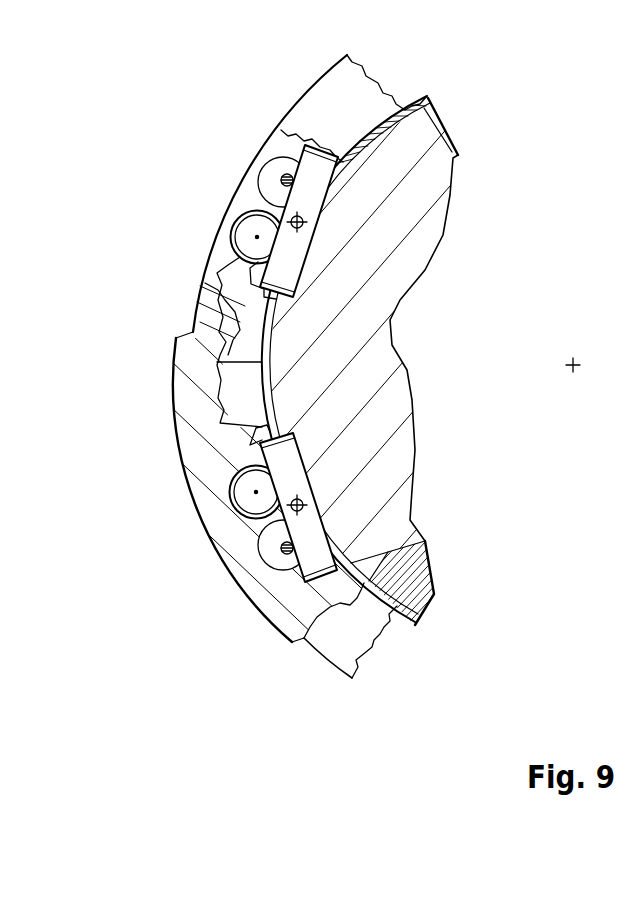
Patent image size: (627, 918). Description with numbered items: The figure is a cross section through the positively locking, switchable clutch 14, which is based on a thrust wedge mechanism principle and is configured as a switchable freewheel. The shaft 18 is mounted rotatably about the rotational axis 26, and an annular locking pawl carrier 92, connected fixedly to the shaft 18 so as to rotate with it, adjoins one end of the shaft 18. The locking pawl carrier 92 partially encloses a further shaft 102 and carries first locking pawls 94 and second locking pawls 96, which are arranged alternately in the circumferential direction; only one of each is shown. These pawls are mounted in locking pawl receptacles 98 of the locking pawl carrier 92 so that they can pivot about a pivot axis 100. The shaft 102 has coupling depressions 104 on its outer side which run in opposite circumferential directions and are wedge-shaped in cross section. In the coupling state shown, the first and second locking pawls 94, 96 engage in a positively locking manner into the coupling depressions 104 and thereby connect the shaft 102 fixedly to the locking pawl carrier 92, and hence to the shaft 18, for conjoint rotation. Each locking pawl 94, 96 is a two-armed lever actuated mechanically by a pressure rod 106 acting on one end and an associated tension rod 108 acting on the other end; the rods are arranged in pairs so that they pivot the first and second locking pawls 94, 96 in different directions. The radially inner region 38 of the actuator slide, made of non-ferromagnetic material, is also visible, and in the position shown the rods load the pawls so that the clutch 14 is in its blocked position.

The positively locking clutch 14 is at (526, 92).
The shaft 18 is at (413, 587).
The rotational axis 26 is at (575, 362).
The radially inner region 38 is at (360, 93).
The locking pawl carrier 92 is at (187, 387).
The first locking pawl 94 is at (285, 455).
The second locking pawl 96 is at (293, 250).
The locking pawl receptacle 98 is at (265, 206).
The pivot axis 100 is at (310, 222).
The shaft 102 is at (387, 457).
The coupling depression 104 is at (322, 278).
The pressure rod 106 is at (250, 236).
The tension rod 108 is at (283, 179).